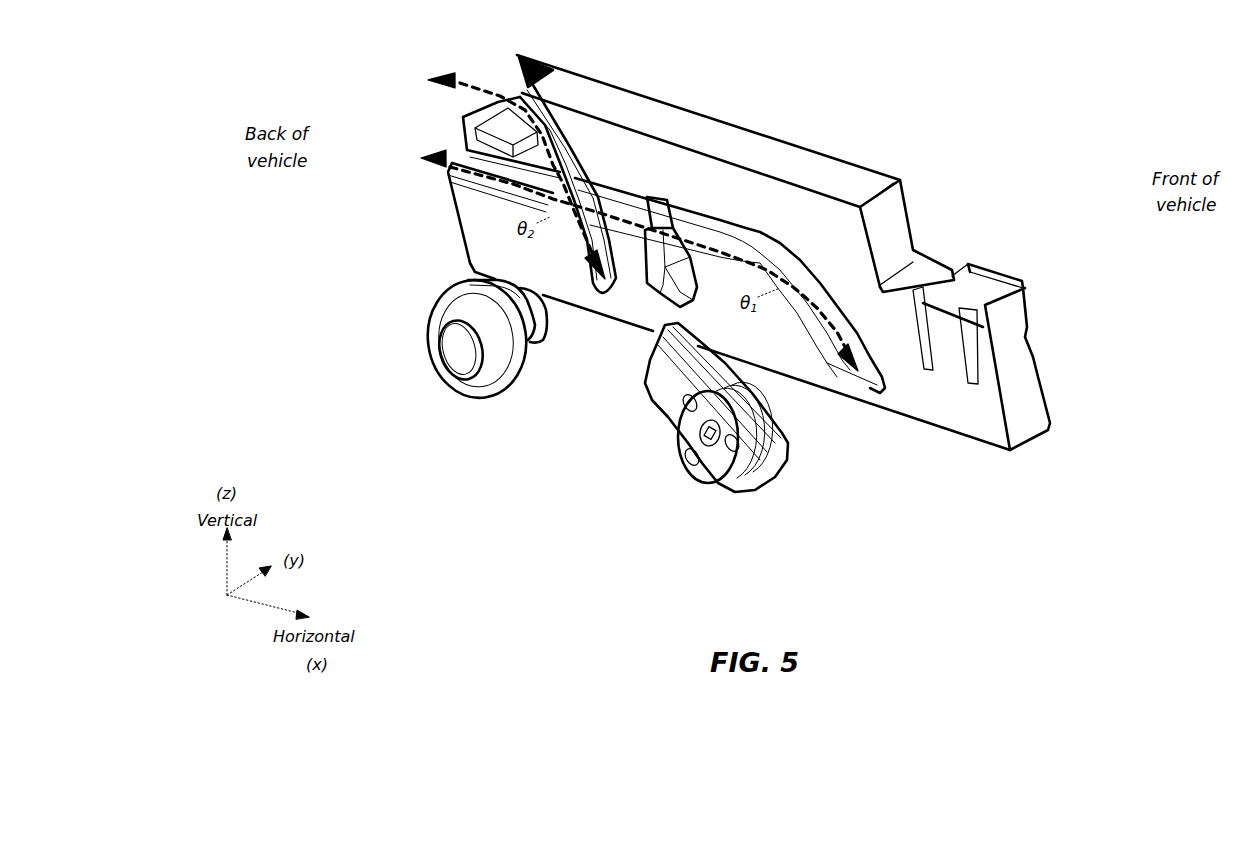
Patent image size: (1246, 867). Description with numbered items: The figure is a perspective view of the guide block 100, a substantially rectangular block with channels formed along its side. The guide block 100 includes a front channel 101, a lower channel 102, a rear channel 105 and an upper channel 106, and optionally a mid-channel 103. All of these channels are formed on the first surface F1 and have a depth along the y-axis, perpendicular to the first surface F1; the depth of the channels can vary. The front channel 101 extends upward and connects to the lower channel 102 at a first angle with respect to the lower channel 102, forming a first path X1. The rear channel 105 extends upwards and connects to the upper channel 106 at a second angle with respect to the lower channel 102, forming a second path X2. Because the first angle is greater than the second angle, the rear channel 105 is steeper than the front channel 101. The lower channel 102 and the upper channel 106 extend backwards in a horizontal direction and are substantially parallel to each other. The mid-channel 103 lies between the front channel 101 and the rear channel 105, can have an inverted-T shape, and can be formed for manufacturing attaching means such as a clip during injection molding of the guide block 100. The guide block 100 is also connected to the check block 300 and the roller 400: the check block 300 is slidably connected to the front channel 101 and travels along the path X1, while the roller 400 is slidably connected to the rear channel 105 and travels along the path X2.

The guide block 100 is at (656, 92).
The front channel 101 is at (817, 330).
The lower channel 102 is at (503, 203).
The mid-channel 103 is at (664, 300).
The rear channel 105 is at (572, 253).
The upper channel 106 is at (473, 117).
The check block 300 is at (757, 497).
The roller 400 is at (480, 405).
The first path X1 is at (621, 258).
The second path X2 is at (500, 174).
The first surface F1 is at (938, 410).